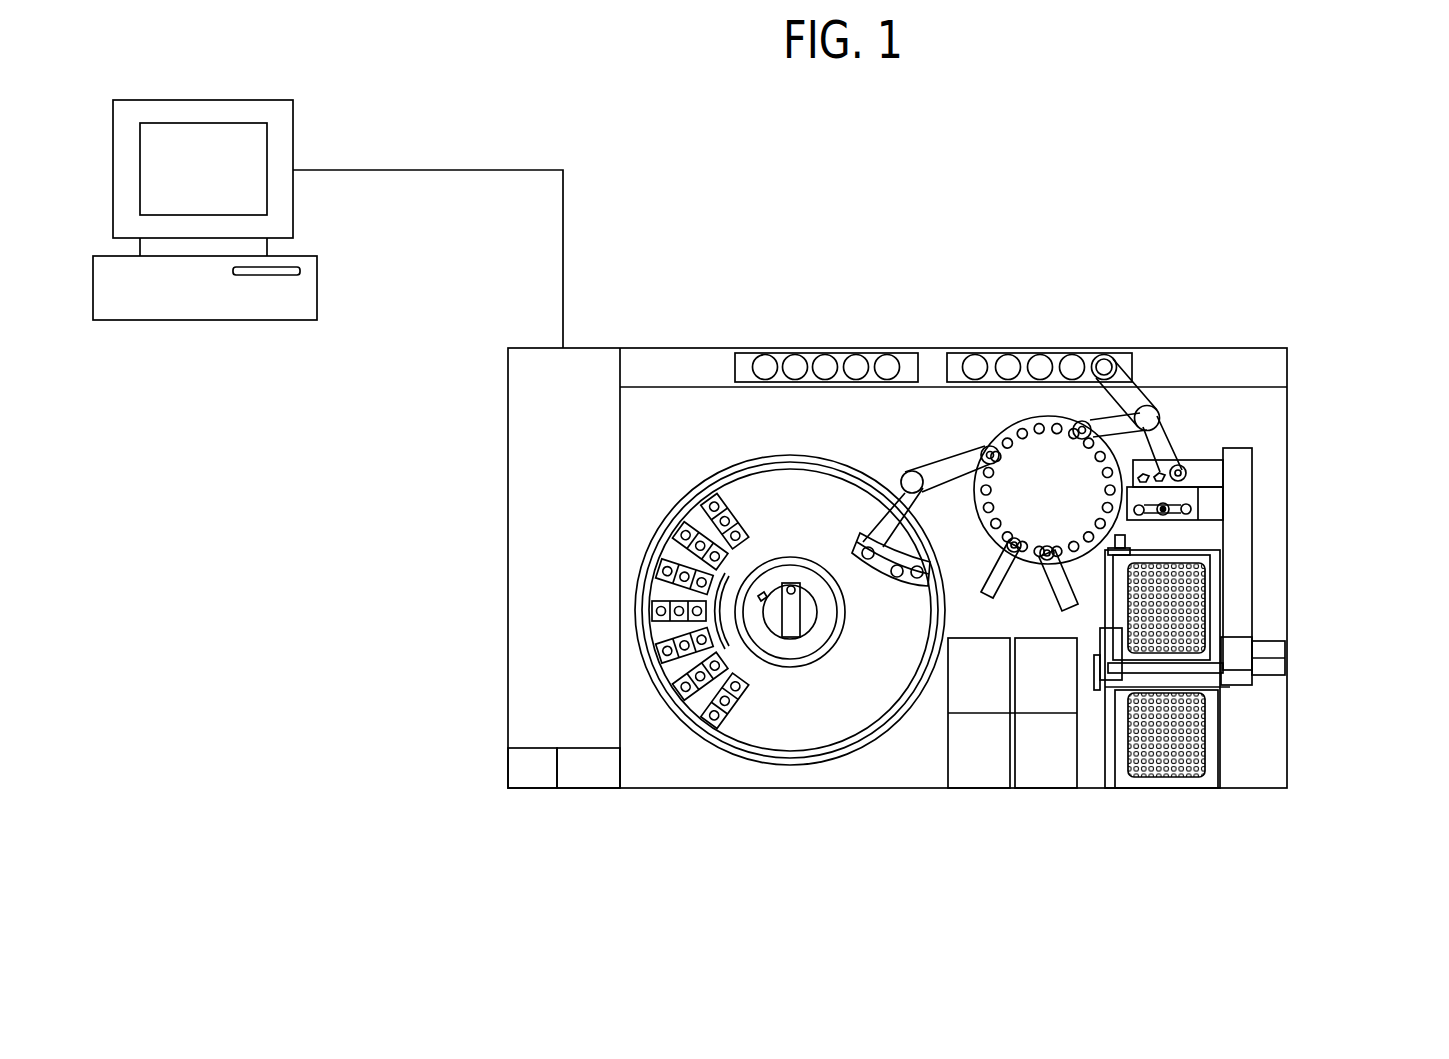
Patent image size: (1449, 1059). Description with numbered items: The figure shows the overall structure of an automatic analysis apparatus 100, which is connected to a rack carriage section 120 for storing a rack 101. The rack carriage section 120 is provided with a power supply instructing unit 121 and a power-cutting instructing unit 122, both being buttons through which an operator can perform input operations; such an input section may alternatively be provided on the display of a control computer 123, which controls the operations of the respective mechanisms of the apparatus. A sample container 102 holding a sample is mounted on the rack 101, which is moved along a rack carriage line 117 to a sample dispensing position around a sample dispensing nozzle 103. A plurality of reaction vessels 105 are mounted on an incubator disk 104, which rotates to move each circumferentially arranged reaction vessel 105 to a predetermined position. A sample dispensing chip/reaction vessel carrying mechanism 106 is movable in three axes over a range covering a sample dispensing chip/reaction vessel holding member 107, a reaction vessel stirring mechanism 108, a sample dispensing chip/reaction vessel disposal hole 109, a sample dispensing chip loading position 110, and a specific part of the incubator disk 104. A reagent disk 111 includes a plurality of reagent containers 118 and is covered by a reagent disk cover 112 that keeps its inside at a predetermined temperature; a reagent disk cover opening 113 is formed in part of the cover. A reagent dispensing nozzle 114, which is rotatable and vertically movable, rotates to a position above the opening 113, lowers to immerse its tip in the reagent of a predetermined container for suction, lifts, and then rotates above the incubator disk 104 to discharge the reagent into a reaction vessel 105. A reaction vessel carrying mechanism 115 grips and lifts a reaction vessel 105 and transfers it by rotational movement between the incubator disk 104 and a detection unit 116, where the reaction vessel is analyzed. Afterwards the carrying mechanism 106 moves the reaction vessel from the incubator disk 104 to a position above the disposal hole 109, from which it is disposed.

The analysis apparatus 100 is at (1212, 282).
The rack 101 is at (731, 363).
The sample container 102 is at (794, 362).
The sample dispensing nozzle 103 is at (1104, 369).
The incubator disk 104 is at (1025, 501).
The reaction vessel 105 is at (1015, 425).
The sample dispensing chip/reaction vessel carrying mechanism 106 is at (1215, 473).
The sample dispensing chip/reaction vessel holding member 107 is at (1180, 650).
The reaction vessel stirring mechanism 108 is at (1187, 511).
The sample dispensing chip/reaction vessel disposal hole 109 is at (1167, 473).
The sample dispensing chip loading position 110 is at (1147, 511).
The reagent disk 111 is at (680, 533).
The reagent disk cover 112 is at (761, 709).
The reagent disk cover opening 113 is at (897, 578).
The reagent dispensing nozzle 114 is at (943, 472).
The reaction vessel carrying mechanism 115 is at (1053, 573).
The detection unit 116 is at (985, 748).
The rack carriage line 117 is at (651, 382).
The reagent container 118 is at (677, 613).
The rack carriage section 120 is at (536, 732).
The power supply instructing unit 121 is at (543, 791).
The power-cutting instructing unit 122 is at (567, 791).
The control computer 123 is at (228, 100).